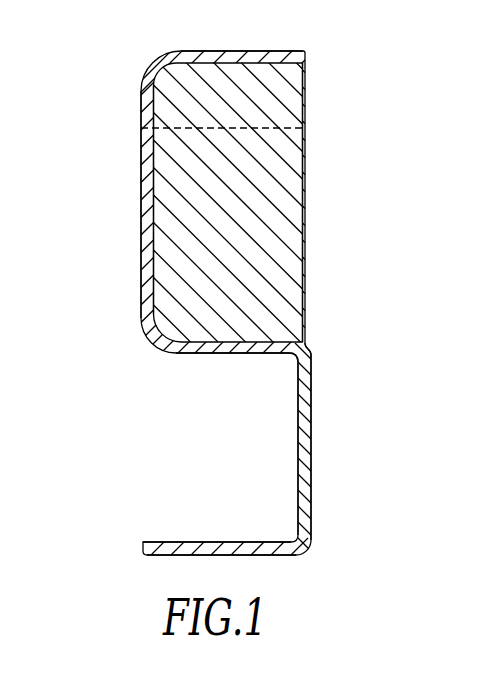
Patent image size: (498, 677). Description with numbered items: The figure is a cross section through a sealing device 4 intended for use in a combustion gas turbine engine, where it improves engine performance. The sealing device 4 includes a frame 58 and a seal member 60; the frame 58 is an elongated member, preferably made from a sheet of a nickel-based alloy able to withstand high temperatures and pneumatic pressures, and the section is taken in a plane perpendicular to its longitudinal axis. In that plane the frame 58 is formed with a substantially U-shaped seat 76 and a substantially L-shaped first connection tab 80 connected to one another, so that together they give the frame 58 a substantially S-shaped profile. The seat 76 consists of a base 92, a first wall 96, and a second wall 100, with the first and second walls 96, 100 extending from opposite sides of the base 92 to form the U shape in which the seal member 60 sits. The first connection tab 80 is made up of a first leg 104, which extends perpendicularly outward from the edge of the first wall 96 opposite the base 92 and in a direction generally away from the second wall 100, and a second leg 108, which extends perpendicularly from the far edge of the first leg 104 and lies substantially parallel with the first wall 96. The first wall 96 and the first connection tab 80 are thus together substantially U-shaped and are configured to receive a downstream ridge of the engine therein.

The sealing device 4 is at (334, 258).
The frame 58 is at (329, 368).
The seal member 60 is at (305, 172).
The seat 76 is at (128, 180).
The first connection tab 80 is at (331, 482).
The base 92 is at (141, 268).
The first wall 96 is at (238, 353).
The second wall 100 is at (230, 50).
The first leg 104 is at (310, 442).
The second leg 108 is at (262, 557).